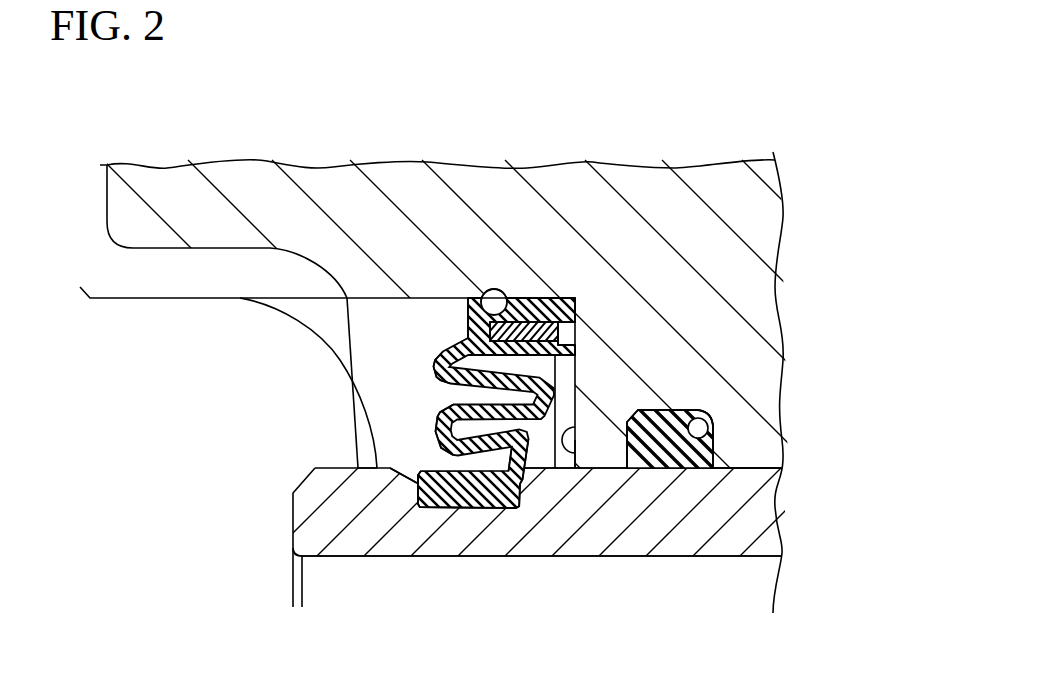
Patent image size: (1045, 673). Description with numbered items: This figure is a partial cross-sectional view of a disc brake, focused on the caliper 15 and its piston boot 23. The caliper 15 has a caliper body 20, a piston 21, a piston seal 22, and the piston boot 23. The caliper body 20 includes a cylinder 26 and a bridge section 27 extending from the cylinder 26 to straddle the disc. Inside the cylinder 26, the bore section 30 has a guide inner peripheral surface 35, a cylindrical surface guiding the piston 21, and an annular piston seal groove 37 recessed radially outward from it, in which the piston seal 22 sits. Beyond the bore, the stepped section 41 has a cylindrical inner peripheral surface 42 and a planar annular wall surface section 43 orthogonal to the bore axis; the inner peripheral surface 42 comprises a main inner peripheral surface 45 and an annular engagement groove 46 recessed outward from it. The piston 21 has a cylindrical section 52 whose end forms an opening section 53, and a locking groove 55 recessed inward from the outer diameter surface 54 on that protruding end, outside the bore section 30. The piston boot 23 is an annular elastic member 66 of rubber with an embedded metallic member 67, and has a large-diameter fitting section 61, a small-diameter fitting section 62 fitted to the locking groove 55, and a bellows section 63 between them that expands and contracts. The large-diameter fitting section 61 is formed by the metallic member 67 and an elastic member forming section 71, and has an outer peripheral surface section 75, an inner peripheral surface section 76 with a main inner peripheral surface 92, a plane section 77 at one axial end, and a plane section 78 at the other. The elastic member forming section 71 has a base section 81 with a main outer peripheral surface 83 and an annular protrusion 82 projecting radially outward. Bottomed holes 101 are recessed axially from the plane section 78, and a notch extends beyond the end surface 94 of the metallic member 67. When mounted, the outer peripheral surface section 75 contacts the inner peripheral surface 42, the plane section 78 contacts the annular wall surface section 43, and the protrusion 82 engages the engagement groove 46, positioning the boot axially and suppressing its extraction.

The caliper 15 is at (802, 172).
The caliper body 20 is at (270, 178).
The piston 21 is at (295, 595).
The piston seal 22 is at (667, 472).
The piston boot 23 is at (403, 481).
The cylinder 26 is at (750, 417).
The bridge section 27 is at (165, 168).
The bore section 30 is at (758, 468).
The guide inner peripheral surface 35 is at (743, 470).
The piston seal groove 37 is at (714, 416).
The stepped section 41 is at (380, 338).
The inner peripheral surface 42 is at (372, 299).
The annular wall surface section 43 is at (560, 453).
The main inner peripheral surface 45 is at (395, 300).
The engagement groove 46 is at (480, 296).
The cylindrical section 52 is at (636, 556).
The opening section 53 is at (296, 562).
The outer diameter surface 54 is at (418, 483).
The locking groove 55 is at (468, 500).
The large-diameter fitting section 61 is at (578, 318).
The small-diameter fitting section 62 is at (437, 508).
The bellows section 63 is at (434, 368).
The elastic member 66 is at (436, 428).
The metallic member 67 is at (466, 318).
The elastic member forming section 71 is at (539, 300).
The outer peripheral surface section 75 is at (492, 289).
The inner peripheral surface section 76 is at (578, 338).
The plane section 77 is at (438, 352).
The plane section 78 is at (578, 318).
The base section 81 is at (574, 362).
The protrusion 82 is at (525, 322).
The main outer peripheral surface 83 is at (556, 300).
The main inner peripheral surface 92 is at (522, 402).
The end surface 94 is at (578, 305).
The hole 101 is at (582, 330).